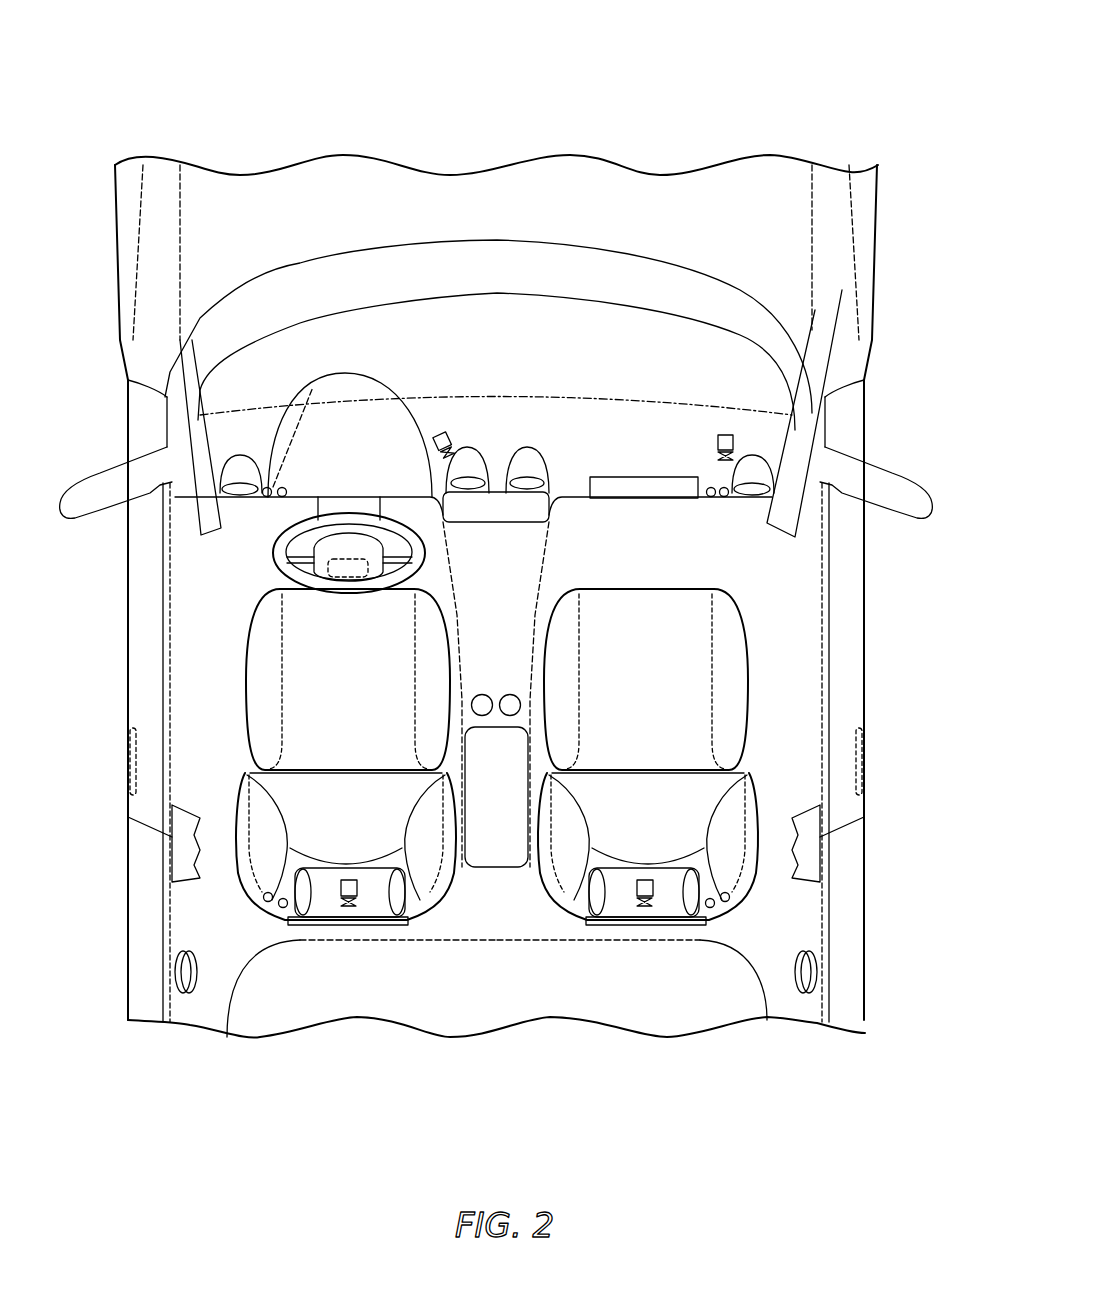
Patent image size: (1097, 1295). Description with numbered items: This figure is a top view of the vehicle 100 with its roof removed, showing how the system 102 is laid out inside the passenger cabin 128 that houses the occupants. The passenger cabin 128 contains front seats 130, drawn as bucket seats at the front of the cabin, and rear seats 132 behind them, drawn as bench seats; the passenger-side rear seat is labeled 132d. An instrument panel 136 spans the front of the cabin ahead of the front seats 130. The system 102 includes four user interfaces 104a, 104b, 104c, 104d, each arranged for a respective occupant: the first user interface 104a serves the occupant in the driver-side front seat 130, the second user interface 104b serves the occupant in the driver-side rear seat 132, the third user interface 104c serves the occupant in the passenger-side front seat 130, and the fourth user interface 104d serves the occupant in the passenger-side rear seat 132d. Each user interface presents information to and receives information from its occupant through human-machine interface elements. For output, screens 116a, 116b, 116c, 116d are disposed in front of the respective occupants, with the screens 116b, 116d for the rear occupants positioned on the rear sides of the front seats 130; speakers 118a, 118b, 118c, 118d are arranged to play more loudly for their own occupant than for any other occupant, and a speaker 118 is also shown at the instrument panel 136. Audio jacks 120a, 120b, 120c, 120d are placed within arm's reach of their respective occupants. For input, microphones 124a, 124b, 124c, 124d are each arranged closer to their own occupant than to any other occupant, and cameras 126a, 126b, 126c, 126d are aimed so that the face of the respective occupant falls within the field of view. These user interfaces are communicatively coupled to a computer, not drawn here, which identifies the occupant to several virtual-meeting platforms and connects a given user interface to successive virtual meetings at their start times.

The vehicle 100 is at (685, 75).
The system 102 is at (946, 544).
The first user interface 104a is at (245, 392).
The second user interface 104b is at (333, 850).
The third user interface 104c is at (771, 405).
The fourth user interface 104d is at (659, 850).
The screen 116a is at (530, 512).
The screen 116b is at (350, 925).
The screen 116c is at (647, 490).
The screen 116d is at (645, 925).
The speaker 118 is at (527, 487).
The speaker 118a is at (240, 500).
The speaker 118b is at (193, 972).
The speaker 118c is at (752, 497).
The speaker 118d is at (800, 972).
The audio jack 120a is at (267, 488).
The audio jack 120b is at (266, 893).
The audio jack 120c is at (723, 497).
The audio jack 120d is at (727, 893).
The microphone 124a is at (283, 488).
The microphone 124b is at (283, 898).
The microphone 124c is at (710, 488).
The microphone 124d is at (710, 898).
The camera 126a is at (443, 430).
The camera 126b is at (349, 879).
The camera 126c is at (727, 433).
The camera 126d is at (645, 879).
The passenger cabin 128 is at (780, 625).
The front seats 130 is at (272, 672).
The rear seats 132 is at (280, 1015).
The passenger side floor 132d is at (710, 1015).
The instrument panel 136 is at (552, 432).